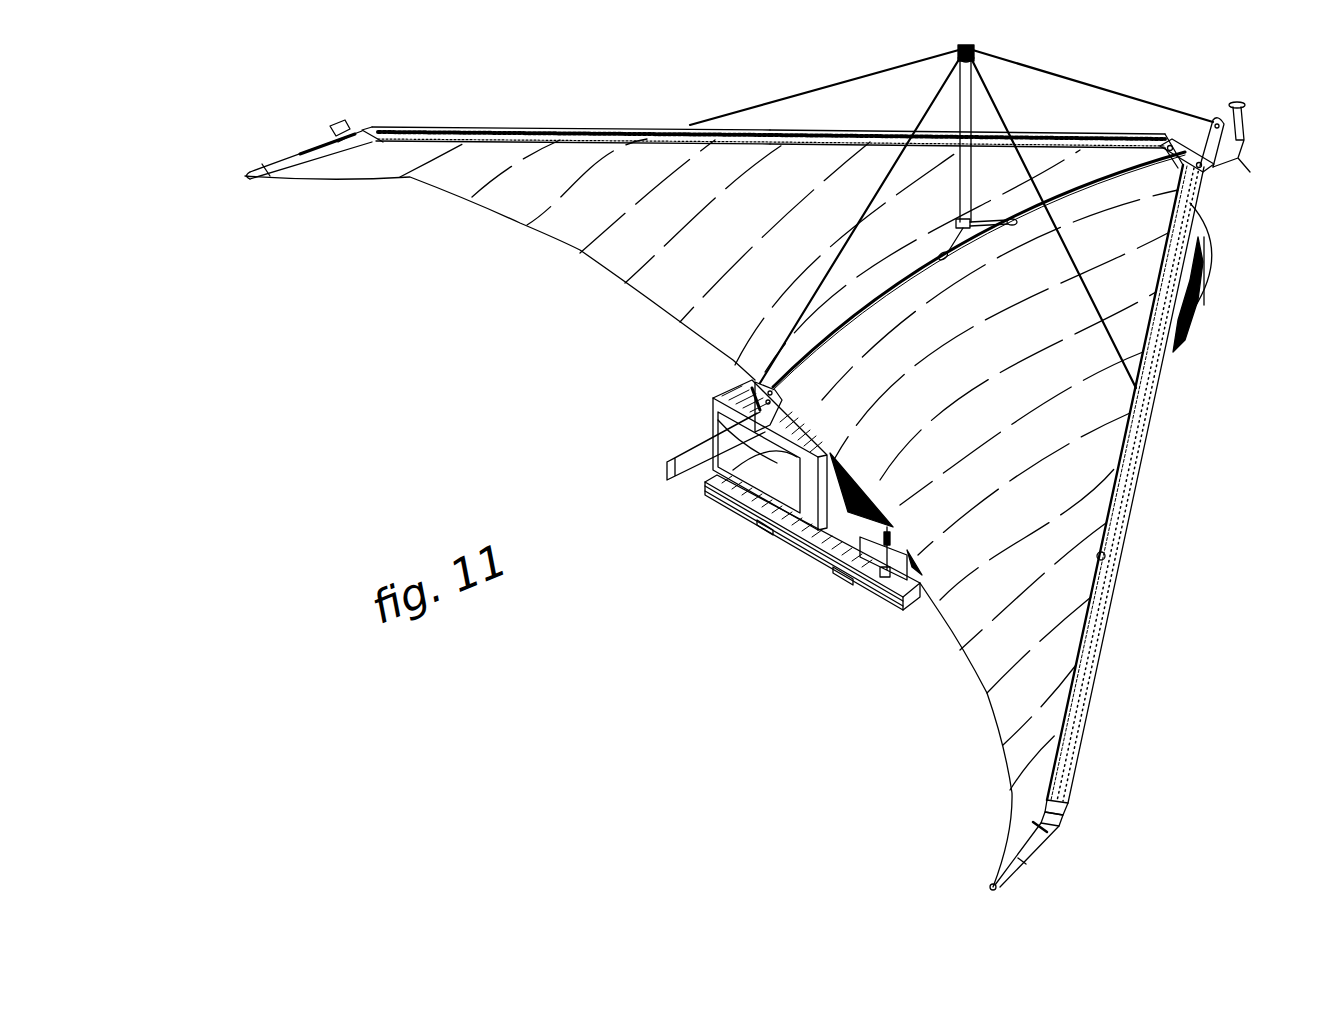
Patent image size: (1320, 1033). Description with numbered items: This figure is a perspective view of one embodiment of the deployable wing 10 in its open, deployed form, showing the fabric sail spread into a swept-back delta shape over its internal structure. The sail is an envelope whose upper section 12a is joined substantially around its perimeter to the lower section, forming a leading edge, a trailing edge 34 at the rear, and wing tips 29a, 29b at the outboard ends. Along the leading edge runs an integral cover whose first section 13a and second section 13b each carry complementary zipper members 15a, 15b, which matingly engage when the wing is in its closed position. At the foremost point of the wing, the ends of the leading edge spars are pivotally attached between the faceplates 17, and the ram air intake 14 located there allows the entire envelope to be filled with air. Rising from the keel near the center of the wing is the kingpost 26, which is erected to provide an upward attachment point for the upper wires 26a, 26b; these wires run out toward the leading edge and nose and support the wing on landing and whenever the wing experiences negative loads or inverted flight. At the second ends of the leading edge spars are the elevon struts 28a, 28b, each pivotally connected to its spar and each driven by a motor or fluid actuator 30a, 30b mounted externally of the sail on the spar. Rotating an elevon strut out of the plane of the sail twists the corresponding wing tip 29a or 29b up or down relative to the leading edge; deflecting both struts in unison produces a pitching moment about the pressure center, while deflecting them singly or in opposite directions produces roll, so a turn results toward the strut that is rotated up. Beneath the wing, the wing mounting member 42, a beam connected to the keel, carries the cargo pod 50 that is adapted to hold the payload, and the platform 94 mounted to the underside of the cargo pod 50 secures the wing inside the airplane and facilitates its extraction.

The deployable wing 10 is at (789, 513).
The upper section 12a is at (1222, 256).
The first section 13a is at (967, 120).
The second section 13b is at (1134, 490).
The ram air intake 14 is at (1192, 117).
The zipper member 15a is at (566, 99).
The zipper member 15b is at (1149, 573).
The faceplates 17 is at (1244, 151).
The kingpost 26 is at (961, 148).
The upper wire 26a is at (913, 212).
The upper wire 26b is at (986, 209).
The elevon strut 28a is at (235, 152).
The elevon strut 28b is at (982, 860).
The wing tip 29a is at (311, 136).
The wing tip 29b is at (981, 847).
The motor or fluid actuator 30a is at (358, 113).
The motor or fluid actuator 30b is at (1006, 799).
The trailing edge 34 is at (500, 278).
The wing mounting member 42 is at (696, 446).
The cargo pod 50 is at (1212, 307).
The platform 94 is at (794, 495).